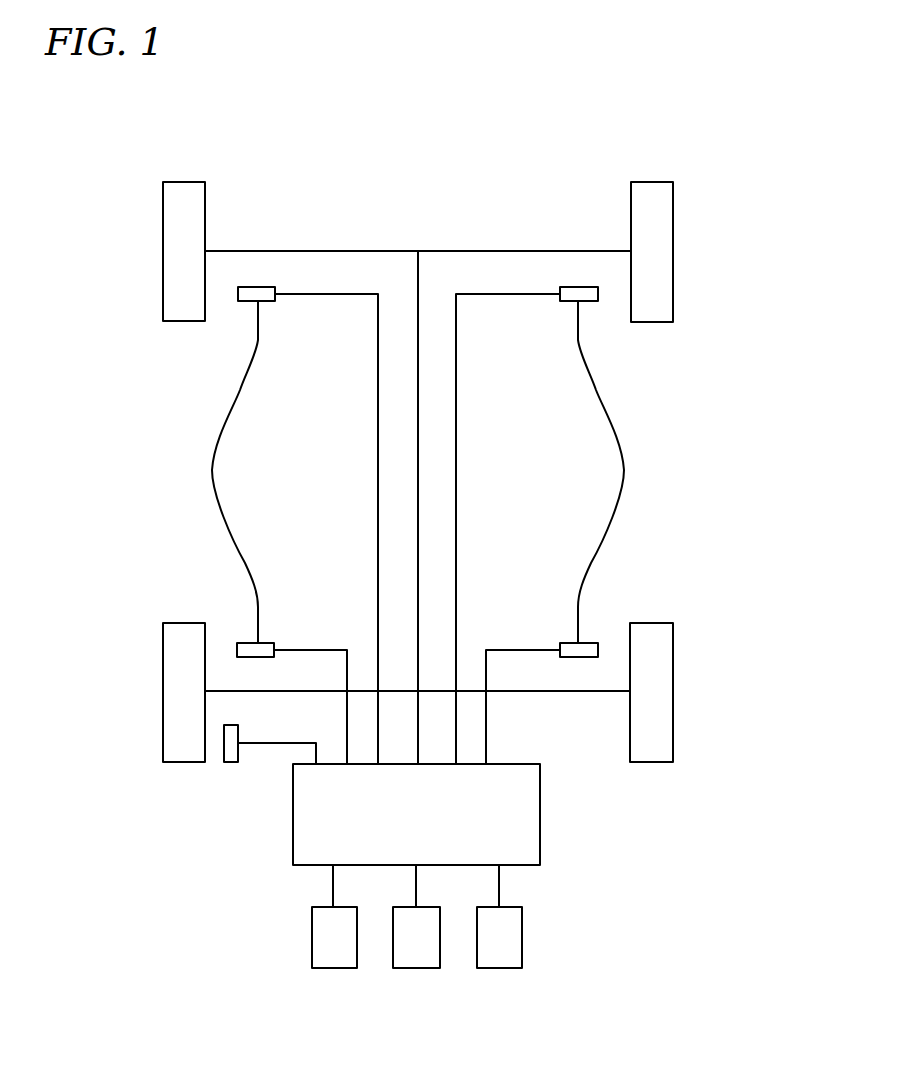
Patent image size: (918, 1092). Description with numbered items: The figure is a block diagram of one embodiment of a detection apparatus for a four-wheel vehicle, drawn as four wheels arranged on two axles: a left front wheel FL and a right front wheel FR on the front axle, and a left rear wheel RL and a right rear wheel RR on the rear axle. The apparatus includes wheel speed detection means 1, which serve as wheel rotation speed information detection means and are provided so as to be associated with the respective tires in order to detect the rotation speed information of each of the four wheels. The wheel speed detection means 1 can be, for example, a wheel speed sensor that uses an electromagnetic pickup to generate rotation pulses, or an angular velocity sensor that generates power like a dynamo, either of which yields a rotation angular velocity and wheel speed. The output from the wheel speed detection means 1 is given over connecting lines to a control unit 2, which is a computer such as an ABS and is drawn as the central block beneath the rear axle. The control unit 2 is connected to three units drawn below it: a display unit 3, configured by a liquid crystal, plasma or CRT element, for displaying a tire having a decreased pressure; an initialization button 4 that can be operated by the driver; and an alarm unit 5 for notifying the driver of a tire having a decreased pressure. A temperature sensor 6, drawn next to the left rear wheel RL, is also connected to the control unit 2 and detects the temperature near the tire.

The wheel speed detection means 1 is at (419, 525).
The control unit 2 is at (540, 818).
The display unit 3 is at (333, 968).
The initialization button 4 is at (416, 968).
The alarm unit 5 is at (499, 968).
The temperature sensor 6 is at (231, 762).
The left front wheel FL is at (163, 231).
The right front wheel FR is at (673, 231).
The left rear wheel RL is at (163, 672).
The right rear wheel RR is at (673, 672).